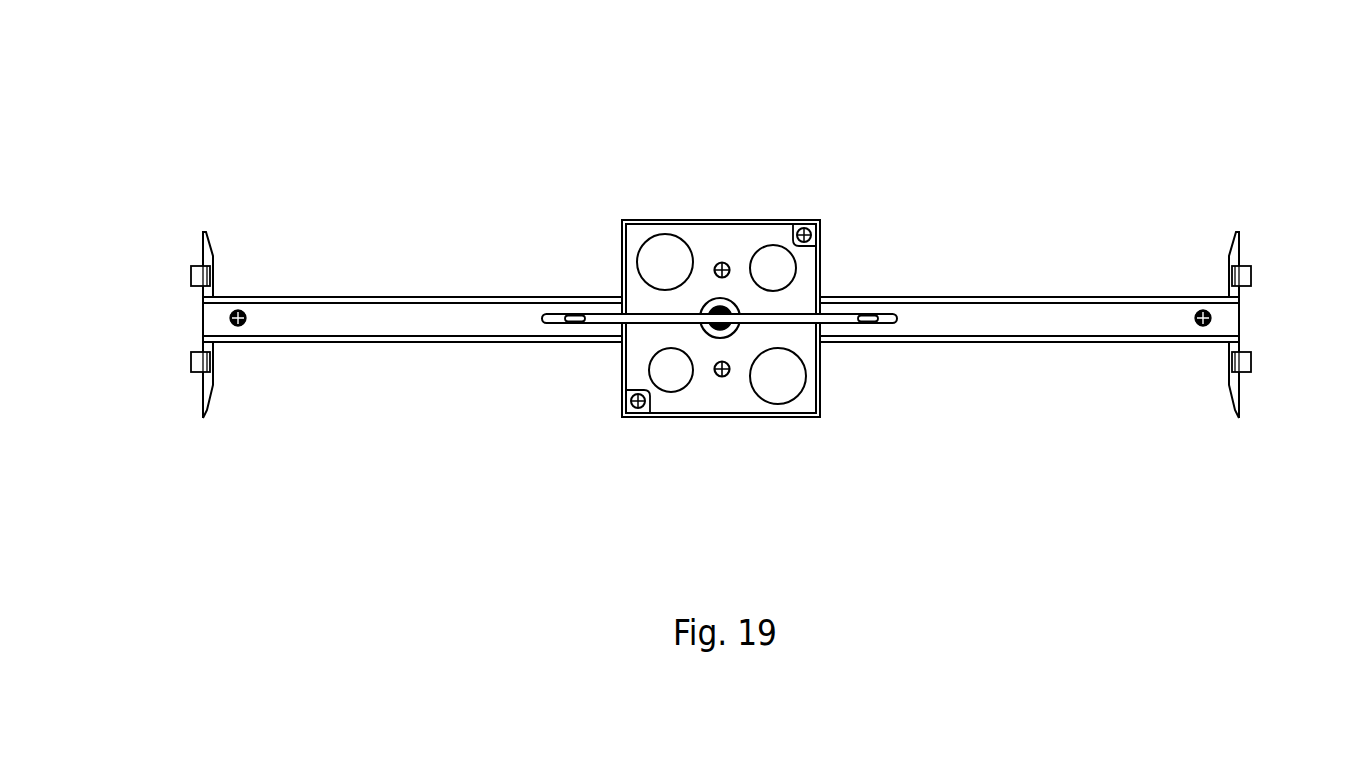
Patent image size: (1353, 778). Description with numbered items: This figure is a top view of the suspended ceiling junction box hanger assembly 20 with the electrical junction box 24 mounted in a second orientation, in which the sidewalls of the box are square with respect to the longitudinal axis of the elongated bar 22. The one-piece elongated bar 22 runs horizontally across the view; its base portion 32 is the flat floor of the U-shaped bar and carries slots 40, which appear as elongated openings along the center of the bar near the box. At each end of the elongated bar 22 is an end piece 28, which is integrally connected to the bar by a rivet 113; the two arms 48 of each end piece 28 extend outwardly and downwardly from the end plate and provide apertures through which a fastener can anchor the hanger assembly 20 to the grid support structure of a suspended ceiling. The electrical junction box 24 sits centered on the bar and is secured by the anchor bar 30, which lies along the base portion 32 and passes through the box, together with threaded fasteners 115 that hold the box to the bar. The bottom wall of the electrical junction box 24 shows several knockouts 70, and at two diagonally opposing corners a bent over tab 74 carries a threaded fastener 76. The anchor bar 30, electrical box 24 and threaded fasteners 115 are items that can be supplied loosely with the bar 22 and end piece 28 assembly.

The electrical box hanger assembly 20 is at (491, 126).
The elongated bar 22 is at (912, 345).
The electrical junction box 24 is at (720, 418).
The end pieces 28 is at (205, 412).
The anchor bar 30 is at (845, 312).
The base portion 32 is at (984, 327).
The slots 40 is at (550, 325).
The arms 48 is at (191, 276).
The knockouts 70 is at (680, 274).
The bent over tab 74 is at (800, 228).
The threaded fastener 76 is at (633, 418).
The rivets 113 is at (241, 327).
The threaded fasteners 115 is at (723, 262).